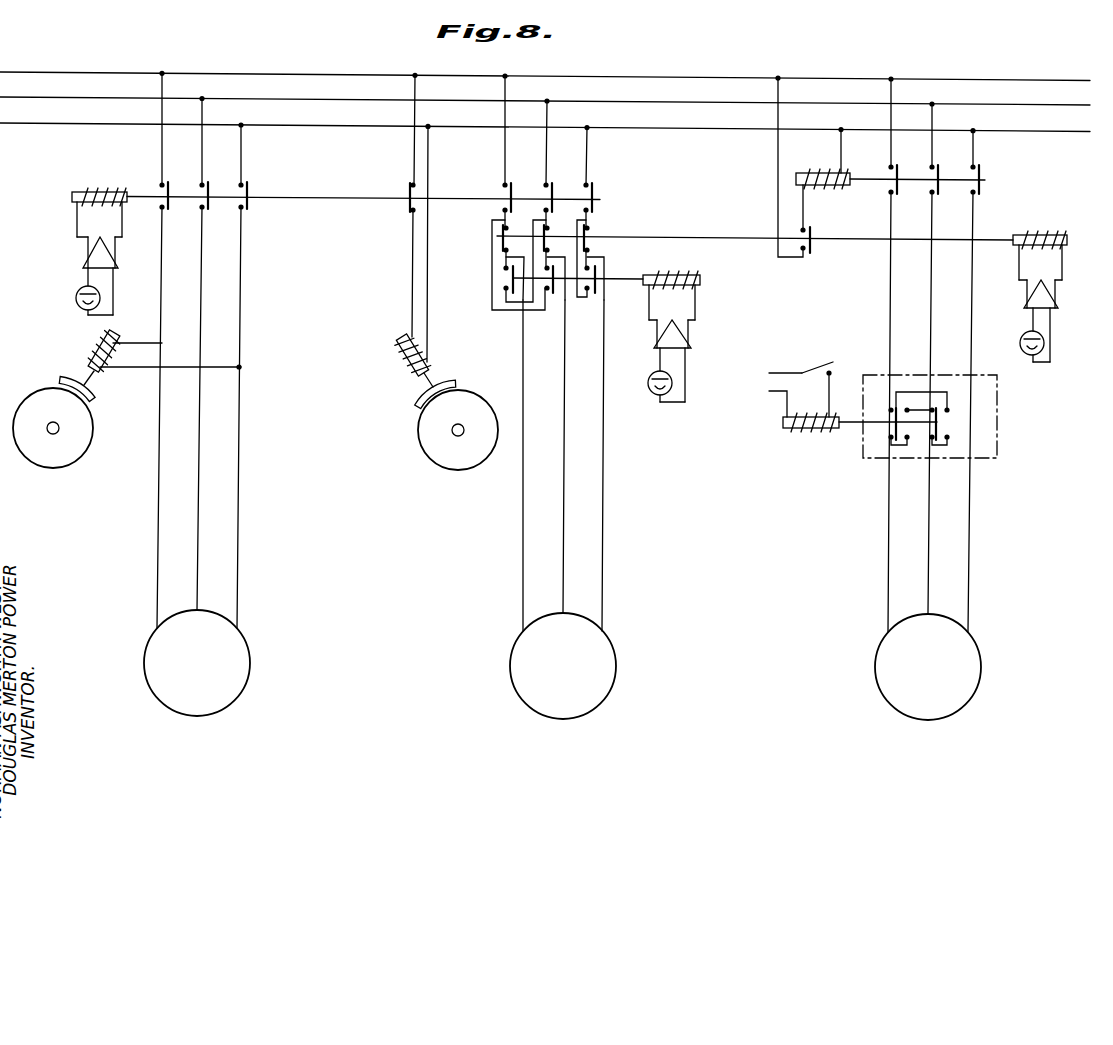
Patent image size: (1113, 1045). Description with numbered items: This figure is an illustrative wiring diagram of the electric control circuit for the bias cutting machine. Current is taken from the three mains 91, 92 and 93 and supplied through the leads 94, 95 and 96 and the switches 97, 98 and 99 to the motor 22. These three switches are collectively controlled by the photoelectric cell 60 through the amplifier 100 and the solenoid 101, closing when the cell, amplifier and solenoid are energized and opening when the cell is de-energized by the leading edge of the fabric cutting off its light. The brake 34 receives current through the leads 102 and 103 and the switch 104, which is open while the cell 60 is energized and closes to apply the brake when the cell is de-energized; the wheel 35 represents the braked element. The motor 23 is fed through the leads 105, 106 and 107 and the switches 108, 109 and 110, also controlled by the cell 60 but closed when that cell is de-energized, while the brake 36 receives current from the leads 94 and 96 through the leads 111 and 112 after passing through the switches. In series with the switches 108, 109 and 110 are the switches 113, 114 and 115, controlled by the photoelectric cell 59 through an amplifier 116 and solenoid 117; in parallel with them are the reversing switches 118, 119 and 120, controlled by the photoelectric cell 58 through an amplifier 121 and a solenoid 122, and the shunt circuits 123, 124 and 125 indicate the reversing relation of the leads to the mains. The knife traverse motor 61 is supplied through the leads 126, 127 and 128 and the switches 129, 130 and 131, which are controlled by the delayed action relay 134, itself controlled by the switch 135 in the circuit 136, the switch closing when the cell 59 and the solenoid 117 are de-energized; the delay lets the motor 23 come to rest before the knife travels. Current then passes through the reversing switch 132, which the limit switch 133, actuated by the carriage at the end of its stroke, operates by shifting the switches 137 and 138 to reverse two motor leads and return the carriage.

The main 91 is at (40, 72).
The main 92 is at (36, 98).
The main 93 is at (46, 124).
The lead 94 is at (163, 143).
The lead 95 is at (203, 143).
The lead 96 is at (242, 143).
The switch 97 is at (168, 209).
The switch 98 is at (209, 209).
The switch 99 is at (250, 197).
The amplifier 100 is at (84, 262).
The solenoid 101 is at (80, 192).
The photoelectric cell 60 is at (76, 298).
The lead 111 is at (132, 340).
The lead 112 is at (134, 368).
The brake 36 is at (68, 466).
The lead 102 is at (411, 264).
The lead 103 is at (430, 247).
The switch 104 is at (410, 212).
The brake 34 is at (400, 346).
The wheel 35 is at (425, 440).
The switch 108 is at (505, 190).
The switch 109 is at (546, 190).
The switch 110 is at (586, 190).
The switch 113 is at (503, 237).
The switch 114 is at (547, 233).
The switch 115 is at (588, 235).
The shunt circuit 123 is at (492, 276).
The reversing switch 118 is at (506, 293).
The shunt circuit 124 is at (512, 306).
The shunt circuit 125 is at (590, 250).
The reversing switch 119 is at (553, 296).
The reversing switch 120 is at (597, 296).
The lead 105 is at (522, 362).
The lead 106 is at (565, 358).
The lead 107 is at (603, 358).
The solenoid 122 is at (690, 276).
The amplifier 121 is at (690, 347).
The photoelectric cell 58 is at (657, 395).
The motor 22 is at (238, 682).
The motor 23 is at (606, 661).
The motor 61 is at (975, 666).
The circuit 136 is at (778, 178).
The delayed action relay 134 is at (800, 173).
The switch 135 is at (814, 234).
The switch 129 is at (897, 190).
The switch 130 is at (939, 190).
The switch 131 is at (982, 179).
The lead 126 is at (890, 286).
The lead 127 is at (931, 288).
The lead 128 is at (972, 288).
The solenoid 117 is at (1066, 234).
The amplifier 116 is at (1058, 305).
The photoelectric cell 59 is at (1028, 355).
The limit switch 133 is at (808, 360).
The switch 137 is at (870, 430).
The reversing switch 132 is at (864, 464).
The switch 138 is at (937, 422).